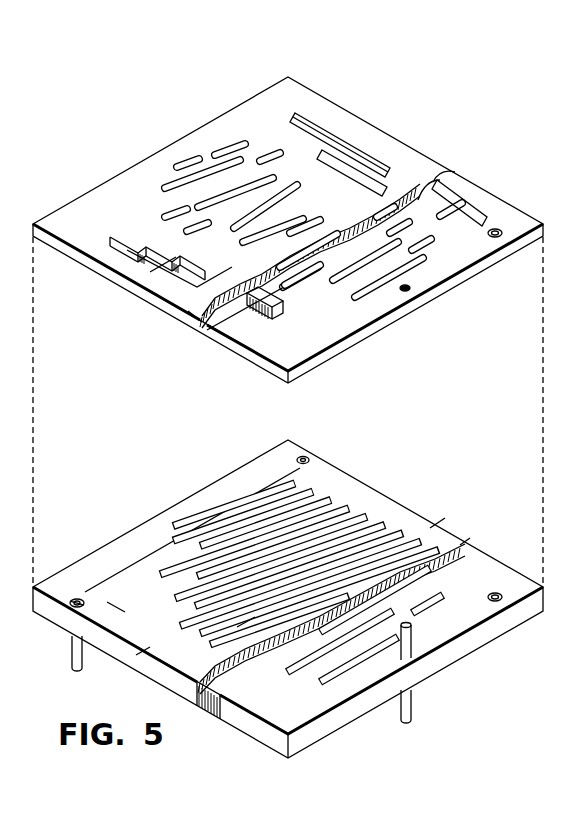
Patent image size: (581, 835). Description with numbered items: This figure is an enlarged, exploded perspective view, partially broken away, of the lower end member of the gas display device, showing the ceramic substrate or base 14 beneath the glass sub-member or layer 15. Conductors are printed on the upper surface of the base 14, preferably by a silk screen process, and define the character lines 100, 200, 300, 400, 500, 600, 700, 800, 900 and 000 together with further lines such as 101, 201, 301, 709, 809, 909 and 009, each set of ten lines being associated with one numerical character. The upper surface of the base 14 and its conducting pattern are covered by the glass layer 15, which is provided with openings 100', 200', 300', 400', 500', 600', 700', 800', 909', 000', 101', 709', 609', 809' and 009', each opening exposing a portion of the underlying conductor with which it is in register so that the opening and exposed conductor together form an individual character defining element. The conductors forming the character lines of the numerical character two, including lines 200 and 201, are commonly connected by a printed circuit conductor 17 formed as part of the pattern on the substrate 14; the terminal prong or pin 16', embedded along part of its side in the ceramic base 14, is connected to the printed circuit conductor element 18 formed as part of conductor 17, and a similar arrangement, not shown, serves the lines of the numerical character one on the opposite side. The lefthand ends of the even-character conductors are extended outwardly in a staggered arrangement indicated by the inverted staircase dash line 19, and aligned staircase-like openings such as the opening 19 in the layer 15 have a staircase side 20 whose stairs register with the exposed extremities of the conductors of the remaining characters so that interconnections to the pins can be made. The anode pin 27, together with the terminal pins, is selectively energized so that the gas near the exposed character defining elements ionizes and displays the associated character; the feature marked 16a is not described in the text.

The ceramic substrate or base 14 is at (332, 734).
The glass sub-member or layer 15 is at (517, 206).
The terminal prong or pin 16' is at (61, 653).
The pin hole 16a is at (78, 599).
The printed circuit conductor 17 is at (136, 655).
The printed circuit conductor element 18 is at (75, 601).
The staircase-like opening 19 is at (127, 251).
The staircase side of opening 20 is at (150, 245).
The anode pin 27 is at (411, 721).
The character line conductor 100 is at (234, 493).
The character line conductor 200 is at (207, 519).
The character line conductor 300 is at (280, 496).
The character line conductor 400 is at (226, 542).
The character line conductor 500 is at (294, 521).
The character line conductor 600 is at (72, 623).
The character line conductor 700 is at (296, 539).
The character line conductor 800 is at (320, 550).
The character line conductor 900 is at (345, 548).
The character line conductor 000 is at (224, 634).
The character line conductor 101 is at (449, 516).
The character line conductor 201 is at (220, 705).
The character line conductor 301 is at (465, 540).
The character line conductor 709 is at (394, 600).
The character line conductor 809 is at (329, 654).
The character line conductor 909 is at (433, 627).
The character line conductor 009 is at (351, 670).
The opening 100' is at (173, 146).
The opening 200' is at (205, 157).
The opening 300' is at (189, 176).
The opening 400' is at (204, 178).
The opening 500' is at (340, 144).
The opening 600' is at (136, 282).
The opening 700' is at (286, 209).
The opening 800' is at (276, 257).
The opening 909' is at (402, 239).
The opening 000' is at (171, 322).
The opening 101' is at (327, 249).
The opening 709' is at (469, 195).
The opening 609' is at (302, 285).
The opening 809' is at (359, 276).
The opening 009' is at (416, 282).